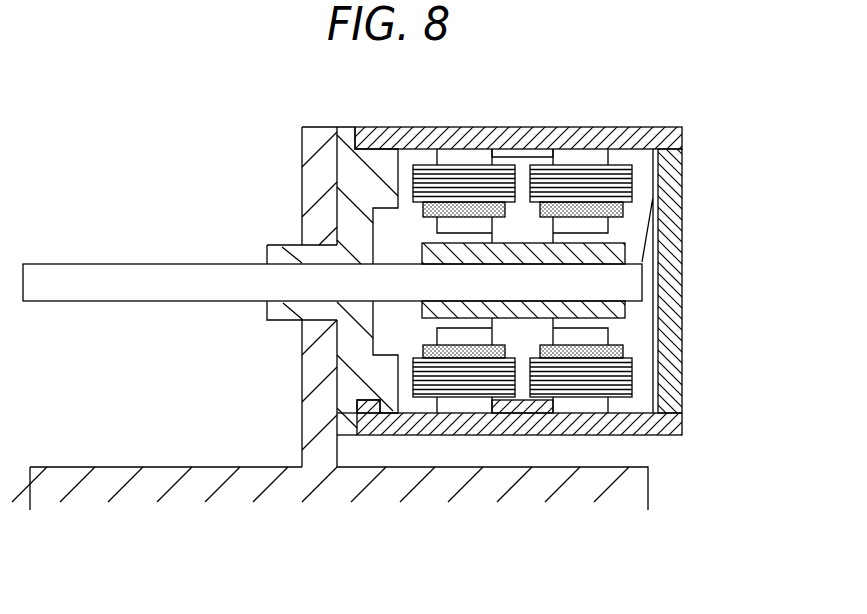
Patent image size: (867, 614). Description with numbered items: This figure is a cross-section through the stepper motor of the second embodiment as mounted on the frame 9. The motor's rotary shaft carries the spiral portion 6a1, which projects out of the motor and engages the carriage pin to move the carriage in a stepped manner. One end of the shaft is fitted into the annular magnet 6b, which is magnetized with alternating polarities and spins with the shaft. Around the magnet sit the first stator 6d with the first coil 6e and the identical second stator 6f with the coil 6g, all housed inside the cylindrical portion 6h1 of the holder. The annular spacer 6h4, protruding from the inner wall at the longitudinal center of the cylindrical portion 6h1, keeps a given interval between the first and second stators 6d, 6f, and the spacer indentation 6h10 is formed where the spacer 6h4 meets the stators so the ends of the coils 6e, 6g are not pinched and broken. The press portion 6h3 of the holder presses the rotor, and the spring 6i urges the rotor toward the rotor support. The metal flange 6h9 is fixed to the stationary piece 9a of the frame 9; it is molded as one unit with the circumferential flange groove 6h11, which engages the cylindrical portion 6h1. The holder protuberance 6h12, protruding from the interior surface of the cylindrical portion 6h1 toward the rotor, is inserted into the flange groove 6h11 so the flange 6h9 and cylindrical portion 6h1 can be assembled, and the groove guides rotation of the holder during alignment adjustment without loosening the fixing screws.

The frame 9 is at (137, 497).
The stationary piece 9a is at (305, 154).
The spiral portion 6a1 is at (98, 285).
The magnet 6b is at (607, 305).
The first stator 6d is at (455, 162).
The first coil 6e is at (487, 377).
The second stator 6f is at (583, 160).
The coil 6g is at (607, 372).
The spring 6i is at (653, 197).
The cylindrical portion 6h1 is at (527, 295).
The press portion 6h3 is at (682, 262).
The spacer 6h4 is at (525, 140).
The flange 6h9 is at (340, 140).
The spacer indentation 6h10 is at (513, 156).
The flange groove 6h11 is at (350, 413).
The holder protuberance 6h12 is at (373, 415).